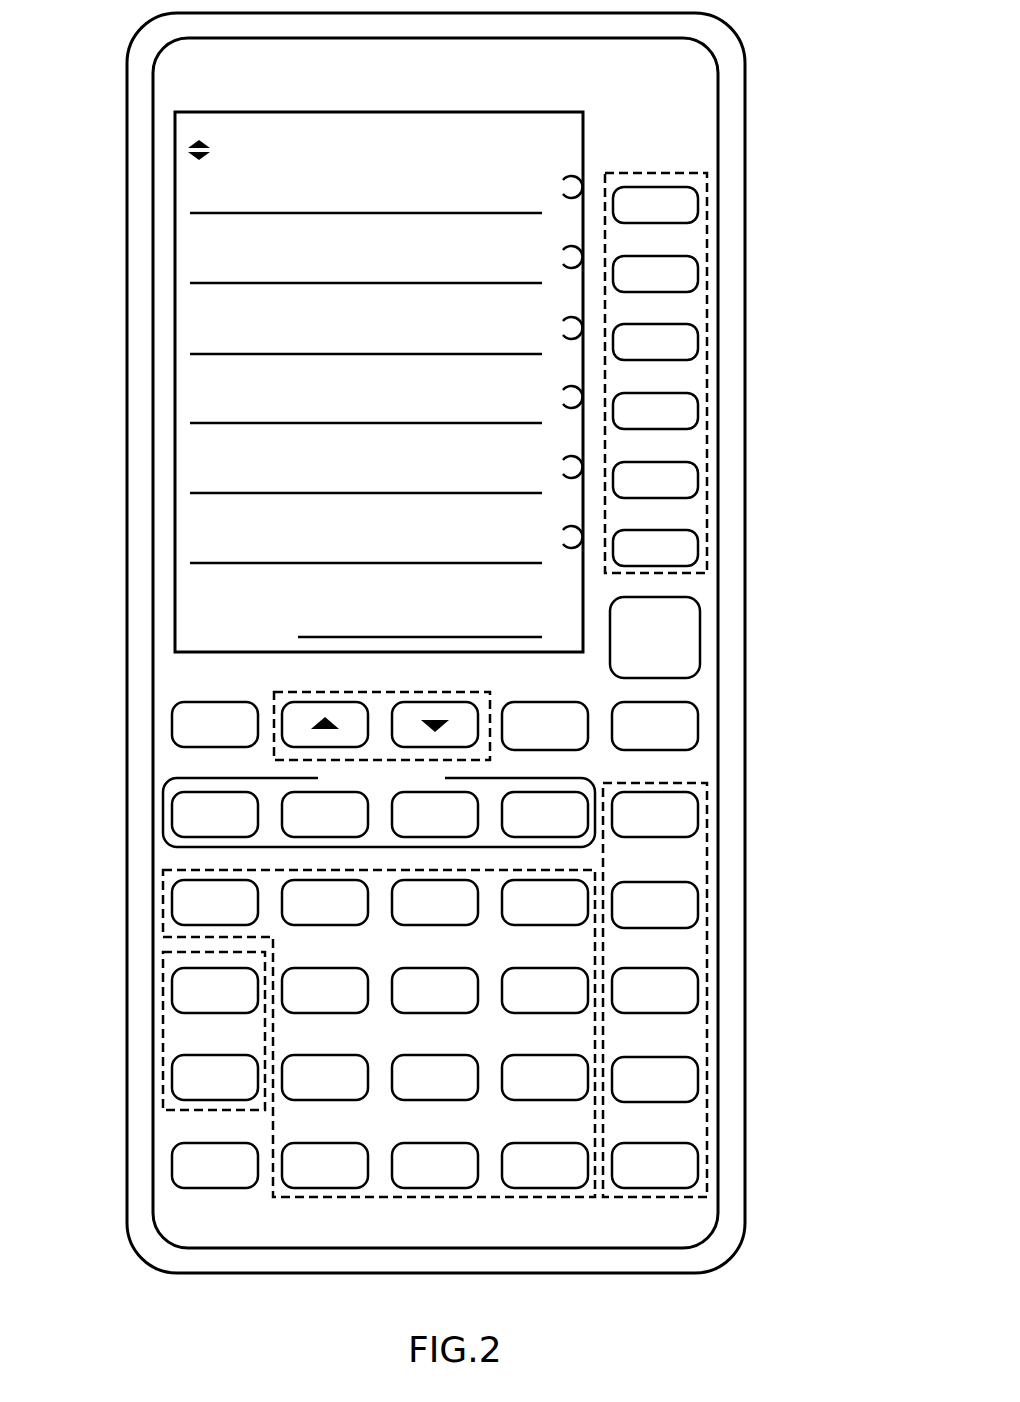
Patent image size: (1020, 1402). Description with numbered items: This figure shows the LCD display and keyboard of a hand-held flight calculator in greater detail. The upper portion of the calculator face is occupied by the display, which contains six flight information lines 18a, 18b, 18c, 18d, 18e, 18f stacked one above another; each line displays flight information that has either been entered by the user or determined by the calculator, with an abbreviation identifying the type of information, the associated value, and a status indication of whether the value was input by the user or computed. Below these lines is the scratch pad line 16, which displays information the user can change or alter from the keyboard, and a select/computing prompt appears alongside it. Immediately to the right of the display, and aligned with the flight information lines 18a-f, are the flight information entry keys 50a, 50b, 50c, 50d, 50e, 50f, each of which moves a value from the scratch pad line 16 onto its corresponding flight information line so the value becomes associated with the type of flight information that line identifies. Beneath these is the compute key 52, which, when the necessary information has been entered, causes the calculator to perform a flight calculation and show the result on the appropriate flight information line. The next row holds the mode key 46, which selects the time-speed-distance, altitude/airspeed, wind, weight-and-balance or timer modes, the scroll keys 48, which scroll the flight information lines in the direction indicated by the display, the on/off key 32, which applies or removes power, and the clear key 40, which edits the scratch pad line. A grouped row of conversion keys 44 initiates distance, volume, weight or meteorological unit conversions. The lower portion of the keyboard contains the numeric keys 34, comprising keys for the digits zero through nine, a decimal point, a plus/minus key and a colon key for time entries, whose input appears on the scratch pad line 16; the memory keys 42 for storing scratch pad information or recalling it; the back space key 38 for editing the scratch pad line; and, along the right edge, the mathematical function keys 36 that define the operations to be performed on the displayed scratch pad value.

The scratch pad line 16 is at (345, 632).
The flight information line 18a is at (208, 200).
The flight information line 18b is at (208, 272).
The flight information line 18c is at (208, 342).
The flight information line 18d is at (208, 412).
The flight information line 18e is at (208, 482).
The flight information line 18f is at (208, 552).
The on/off key 32 is at (592, 715).
The numeric keys 34 is at (515, 1200).
The mathematical function keys 36 is at (707, 860).
The back space key 38 is at (168, 1165).
The clear key 40 is at (705, 725).
The memory keys 42 is at (163, 1040).
The conversion keys 44 is at (150, 802).
The mode key 46 is at (175, 698).
The scroll keys 48 is at (272, 690).
The flight information entry key 50a is at (745, 185).
The flight information entry key 50b is at (742, 255).
The flight information entry key 50c is at (742, 325).
The flight information entry key 50d is at (737, 398).
The flight information entry key 50e is at (735, 468).
The flight information entry key 50f is at (728, 538).
The compute key 52 is at (707, 630).